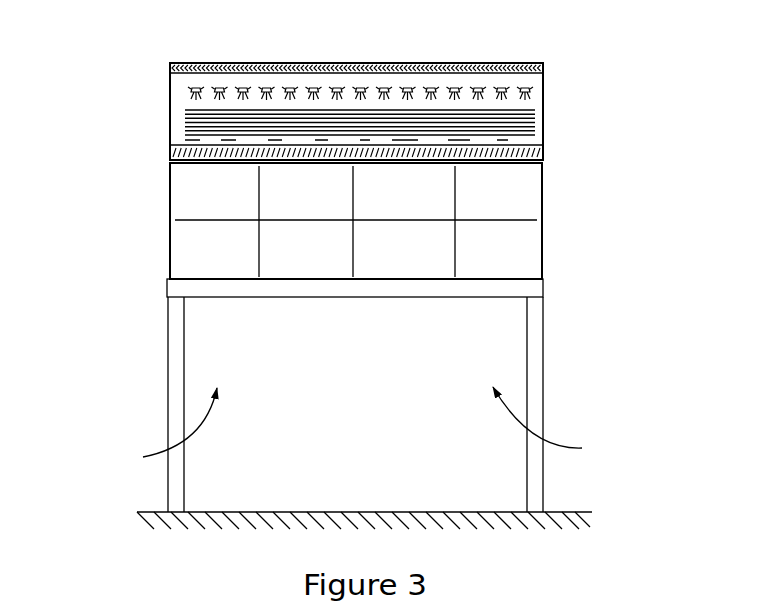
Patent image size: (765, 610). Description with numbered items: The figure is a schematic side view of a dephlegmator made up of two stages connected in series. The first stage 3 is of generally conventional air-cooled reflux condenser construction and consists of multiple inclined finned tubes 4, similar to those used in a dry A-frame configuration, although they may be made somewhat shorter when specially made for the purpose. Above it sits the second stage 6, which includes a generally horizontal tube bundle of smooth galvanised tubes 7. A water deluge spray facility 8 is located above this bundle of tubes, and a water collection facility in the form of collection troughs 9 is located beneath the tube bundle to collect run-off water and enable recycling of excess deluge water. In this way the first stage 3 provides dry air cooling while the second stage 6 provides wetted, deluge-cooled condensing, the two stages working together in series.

The first stage 3 is at (145, 216).
The inclined finned tubes 4 is at (516, 194).
The second stage 6 is at (145, 112).
The smooth galvanised tubes 7 is at (527, 128).
The water deluge spray facility 8 is at (512, 93).
The collection troughs 9 is at (507, 157).